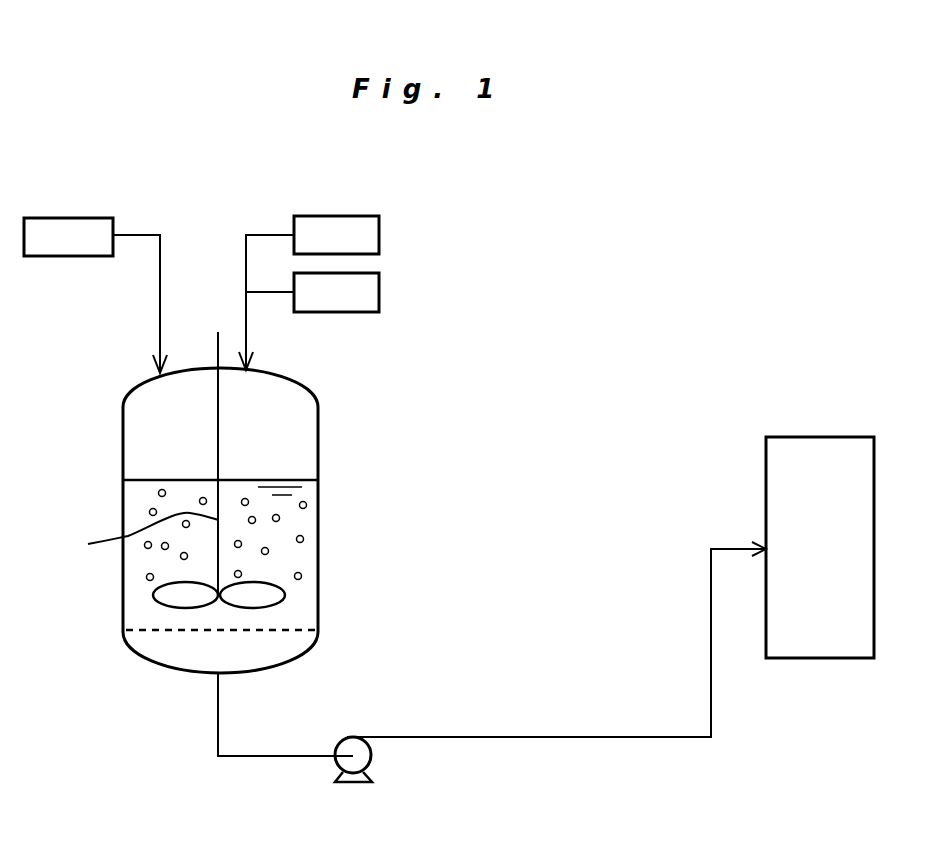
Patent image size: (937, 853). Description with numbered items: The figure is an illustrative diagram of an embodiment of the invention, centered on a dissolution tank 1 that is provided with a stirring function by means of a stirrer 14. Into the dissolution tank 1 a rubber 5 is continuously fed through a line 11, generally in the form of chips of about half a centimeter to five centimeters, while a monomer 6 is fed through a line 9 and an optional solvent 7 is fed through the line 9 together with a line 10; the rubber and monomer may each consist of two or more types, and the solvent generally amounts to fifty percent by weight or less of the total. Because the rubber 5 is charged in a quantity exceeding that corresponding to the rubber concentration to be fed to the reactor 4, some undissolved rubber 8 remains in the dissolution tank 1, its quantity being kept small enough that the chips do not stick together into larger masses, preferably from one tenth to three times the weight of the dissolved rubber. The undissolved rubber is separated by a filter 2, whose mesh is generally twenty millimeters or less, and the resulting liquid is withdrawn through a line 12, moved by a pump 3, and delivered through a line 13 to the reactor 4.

The dissolution tank 1 is at (165, 670).
The filter 2 is at (152, 632).
The pump 3 is at (370, 761).
The reactor 4 is at (818, 437).
The rubber 5 is at (59, 257).
The monomer 6 is at (379, 292).
The solvent 7 is at (379, 235).
The undissolved rubber 8 is at (304, 539).
The line 9 is at (246, 318).
The line 10 is at (246, 262).
The line 11 is at (160, 287).
The line 12 is at (262, 758).
The line 13 is at (514, 738).
The stirrer 14 is at (134, 538).